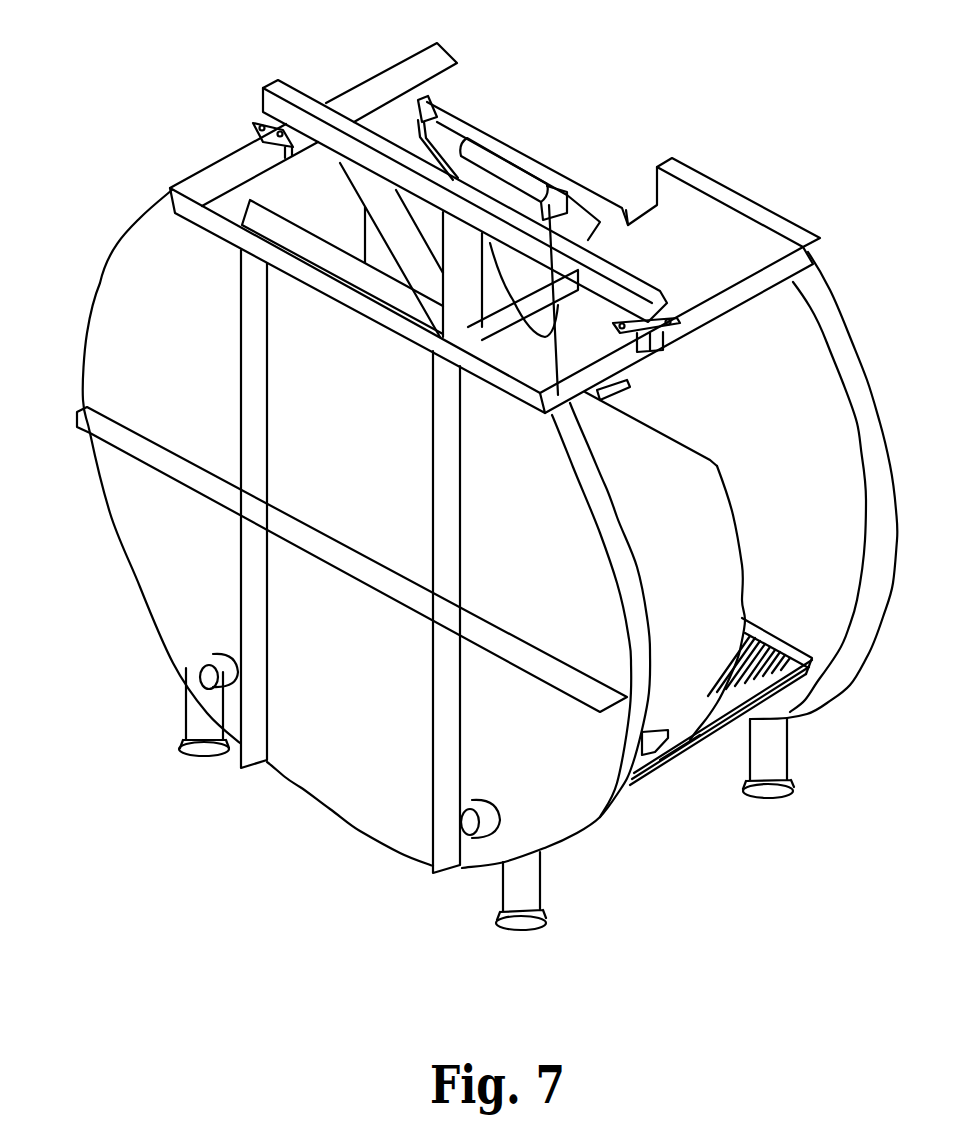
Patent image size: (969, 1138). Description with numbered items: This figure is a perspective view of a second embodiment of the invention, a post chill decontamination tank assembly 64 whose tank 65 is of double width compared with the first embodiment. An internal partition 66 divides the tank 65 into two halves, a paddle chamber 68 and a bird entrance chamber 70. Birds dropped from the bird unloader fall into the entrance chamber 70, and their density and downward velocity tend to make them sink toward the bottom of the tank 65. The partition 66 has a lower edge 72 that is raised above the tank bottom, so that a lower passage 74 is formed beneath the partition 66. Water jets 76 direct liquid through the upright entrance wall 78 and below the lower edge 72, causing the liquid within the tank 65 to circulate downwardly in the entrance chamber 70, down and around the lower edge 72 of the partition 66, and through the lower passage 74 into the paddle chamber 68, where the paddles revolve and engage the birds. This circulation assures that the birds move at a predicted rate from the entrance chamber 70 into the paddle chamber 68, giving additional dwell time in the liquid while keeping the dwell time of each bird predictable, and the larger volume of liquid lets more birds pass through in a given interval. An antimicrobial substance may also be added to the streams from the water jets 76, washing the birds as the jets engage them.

The post chill decontamination tank assembly 64 is at (100, 203).
The tank 65 is at (95, 280).
The partition 66 is at (687, 728).
The paddle chamber 68 is at (828, 566).
The bird entrance chamber 70 is at (701, 604).
The lower edge 72 is at (695, 738).
The lower passage 74 is at (642, 752).
The water jets 76 is at (230, 667).
The upright entrance wall 78 is at (128, 498).